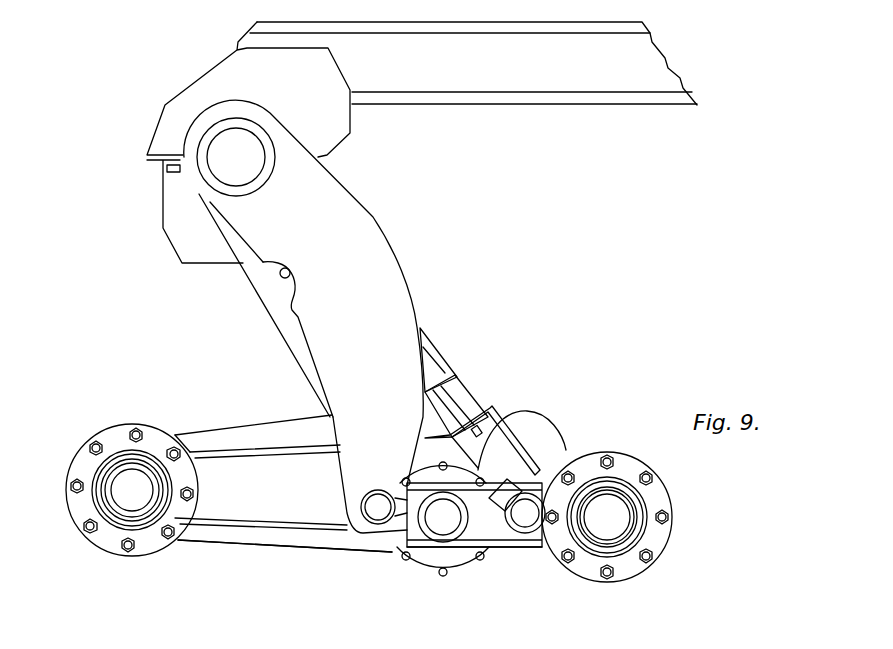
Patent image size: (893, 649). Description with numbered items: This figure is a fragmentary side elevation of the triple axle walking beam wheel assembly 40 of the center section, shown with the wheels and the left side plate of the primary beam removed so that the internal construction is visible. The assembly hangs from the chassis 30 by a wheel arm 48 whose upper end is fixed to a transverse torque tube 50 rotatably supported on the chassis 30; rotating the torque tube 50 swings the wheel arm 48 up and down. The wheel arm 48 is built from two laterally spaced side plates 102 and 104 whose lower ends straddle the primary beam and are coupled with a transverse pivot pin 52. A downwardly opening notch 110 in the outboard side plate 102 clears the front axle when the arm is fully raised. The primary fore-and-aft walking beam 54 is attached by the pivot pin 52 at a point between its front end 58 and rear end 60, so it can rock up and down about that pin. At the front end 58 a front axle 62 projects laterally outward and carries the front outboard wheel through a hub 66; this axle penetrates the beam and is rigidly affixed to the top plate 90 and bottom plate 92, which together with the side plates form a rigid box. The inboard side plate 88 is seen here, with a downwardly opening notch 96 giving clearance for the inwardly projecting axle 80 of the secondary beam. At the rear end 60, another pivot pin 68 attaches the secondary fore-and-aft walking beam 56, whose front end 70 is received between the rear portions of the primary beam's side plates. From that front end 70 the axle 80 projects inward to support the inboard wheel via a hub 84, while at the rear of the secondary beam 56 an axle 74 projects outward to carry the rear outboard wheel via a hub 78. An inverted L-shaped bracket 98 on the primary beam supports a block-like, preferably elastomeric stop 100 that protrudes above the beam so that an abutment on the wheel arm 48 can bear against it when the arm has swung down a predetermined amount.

The chassis 30 is at (592, 85).
The wheel assembly 40 is at (298, 563).
The wheel arm 48 is at (386, 221).
The torque tube 50 is at (223, 164).
The pivot pin 52 is at (372, 507).
The primary fore-and-aft walking beam 54 is at (233, 417).
The secondary fore-and-aft walking beam 56 is at (520, 560).
The front end of primary beam 58 is at (175, 433).
The rear end of primary beam 60 is at (563, 447).
The front axle 62 is at (125, 502).
The hub 66 is at (88, 458).
The pivot pin 68 is at (527, 520).
The front end of secondary beam 70 is at (412, 545).
The axle 74 is at (617, 513).
The hub 78 is at (667, 532).
The axle 80 is at (443, 510).
The hub 84 is at (453, 577).
The inboard side plate 88 is at (298, 417).
The top plate 90 is at (207, 457).
The bottom plate 92 is at (247, 528).
The notch 96 is at (478, 468).
The L-shaped bracket 98 is at (512, 417).
The stop 100 is at (462, 382).
The outboard side plate 102 is at (322, 323).
The side plate 104 is at (260, 268).
The notch 110 is at (293, 282).